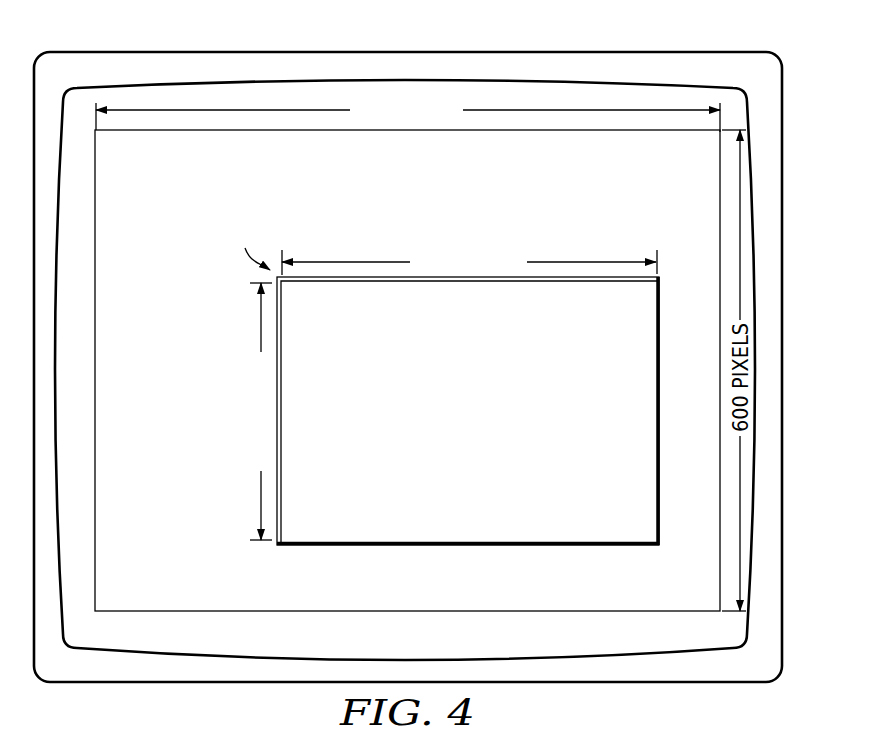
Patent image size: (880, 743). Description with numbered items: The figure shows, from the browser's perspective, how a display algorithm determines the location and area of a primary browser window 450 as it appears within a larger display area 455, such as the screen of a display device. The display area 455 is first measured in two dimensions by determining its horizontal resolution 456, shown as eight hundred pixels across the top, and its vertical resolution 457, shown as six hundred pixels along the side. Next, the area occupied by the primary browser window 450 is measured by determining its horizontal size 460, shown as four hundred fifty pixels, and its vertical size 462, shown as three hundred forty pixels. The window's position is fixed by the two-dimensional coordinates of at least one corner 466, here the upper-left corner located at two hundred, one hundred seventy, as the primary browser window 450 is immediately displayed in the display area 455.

The primary browser window 450 is at (490, 436).
The display area 455 is at (198, 566).
The horizontal resolution 456 is at (406, 96).
The vertical resolution 457 is at (753, 377).
The horizontal size 460 is at (470, 250).
The vertical size 462 is at (248, 412).
The corner 466 is at (242, 214).